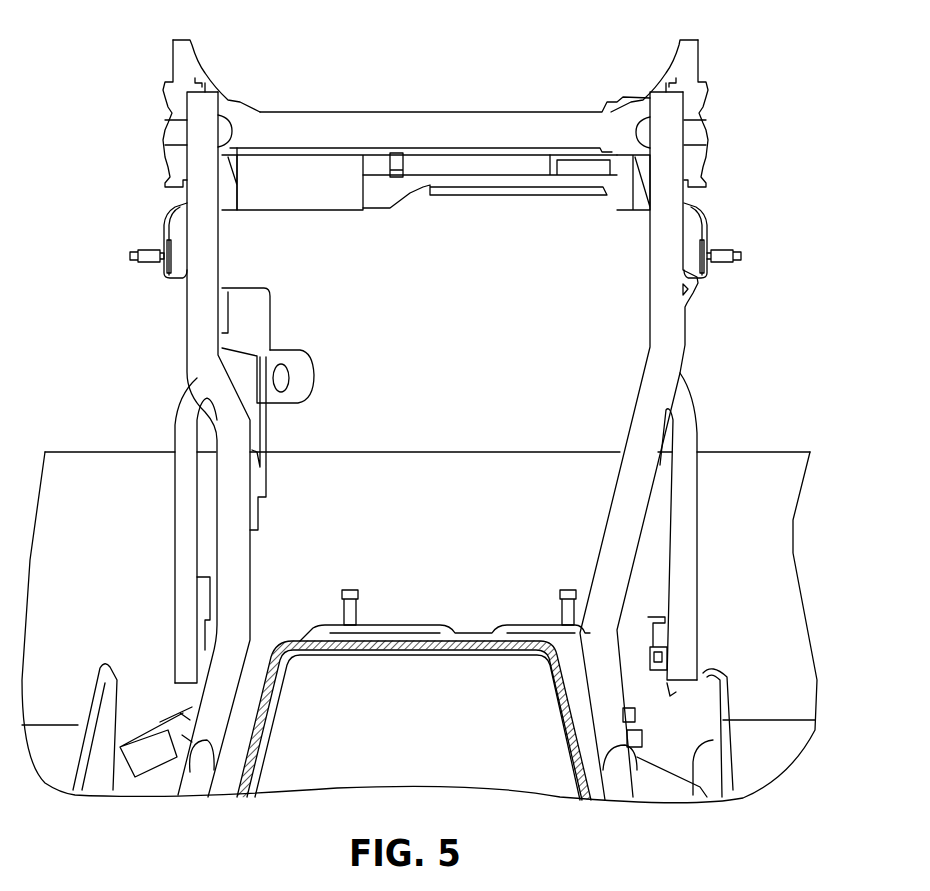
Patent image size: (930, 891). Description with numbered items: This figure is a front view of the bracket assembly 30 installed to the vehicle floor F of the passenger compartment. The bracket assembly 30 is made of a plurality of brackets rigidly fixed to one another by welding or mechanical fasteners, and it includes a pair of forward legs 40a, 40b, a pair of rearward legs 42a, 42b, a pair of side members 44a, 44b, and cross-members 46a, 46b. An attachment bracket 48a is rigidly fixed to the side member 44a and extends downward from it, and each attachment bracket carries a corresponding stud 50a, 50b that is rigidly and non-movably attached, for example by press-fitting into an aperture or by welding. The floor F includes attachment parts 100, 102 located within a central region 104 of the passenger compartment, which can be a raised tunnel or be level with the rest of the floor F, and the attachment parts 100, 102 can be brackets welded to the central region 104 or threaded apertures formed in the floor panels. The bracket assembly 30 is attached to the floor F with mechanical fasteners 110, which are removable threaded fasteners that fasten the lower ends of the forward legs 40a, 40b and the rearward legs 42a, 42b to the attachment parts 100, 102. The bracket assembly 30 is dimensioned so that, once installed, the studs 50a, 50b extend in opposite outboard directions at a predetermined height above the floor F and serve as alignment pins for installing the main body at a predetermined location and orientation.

The bracket assembly 30 is at (327, 105).
The cross-member 46a is at (474, 138).
The cross-member 46b is at (499, 190).
The side member 44a is at (640, 178).
The side member 44b is at (228, 172).
The forward leg 40a is at (667, 352).
The forward leg 40b is at (235, 556).
The attachment bracket 48a is at (172, 218).
The stud 50a is at (735, 258).
The stud 50b is at (135, 258).
The rearward leg 42a is at (683, 490).
The rearward leg 42b is at (190, 488).
The vehicle floor F is at (748, 555).
The central region 104 is at (273, 707).
The attachment part 102 is at (665, 683).
The attachment part 100 is at (189, 775).
The mechanical fastener 110 is at (165, 738).